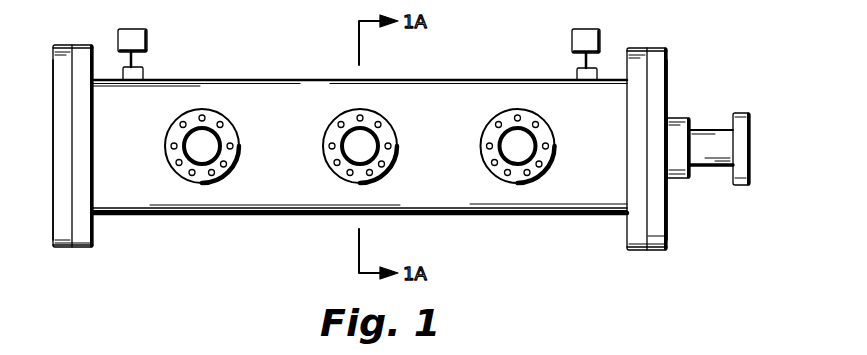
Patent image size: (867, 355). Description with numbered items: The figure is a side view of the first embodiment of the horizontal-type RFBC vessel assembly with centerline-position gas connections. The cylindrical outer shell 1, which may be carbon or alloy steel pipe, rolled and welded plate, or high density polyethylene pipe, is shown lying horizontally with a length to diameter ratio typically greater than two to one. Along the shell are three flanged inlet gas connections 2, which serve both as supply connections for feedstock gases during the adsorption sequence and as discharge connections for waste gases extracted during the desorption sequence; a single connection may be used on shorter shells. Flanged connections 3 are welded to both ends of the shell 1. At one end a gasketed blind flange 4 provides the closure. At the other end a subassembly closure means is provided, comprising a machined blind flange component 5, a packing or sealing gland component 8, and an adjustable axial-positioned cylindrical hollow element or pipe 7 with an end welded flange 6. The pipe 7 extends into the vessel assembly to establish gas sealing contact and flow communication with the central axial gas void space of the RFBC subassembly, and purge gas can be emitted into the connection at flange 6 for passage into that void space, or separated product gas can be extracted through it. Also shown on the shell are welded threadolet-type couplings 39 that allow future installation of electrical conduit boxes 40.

The outer shell 1 is at (265, 79).
The flanged inlet gas connections 2 is at (166, 126).
The flanged connections 3 is at (80, 44).
The gasketed blind flange 4 is at (52, 45).
The machined blind flange component 5 is at (668, 50).
The end welded flange 6 is at (752, 122).
The adjustable axial-positioned cylindrical hollow element or pipe 7 is at (708, 130).
The packing or sealing gland component 8 is at (693, 180).
The welded threadolet-type coupling 39 is at (144, 68).
The electrical conduit box 40 is at (147, 30).